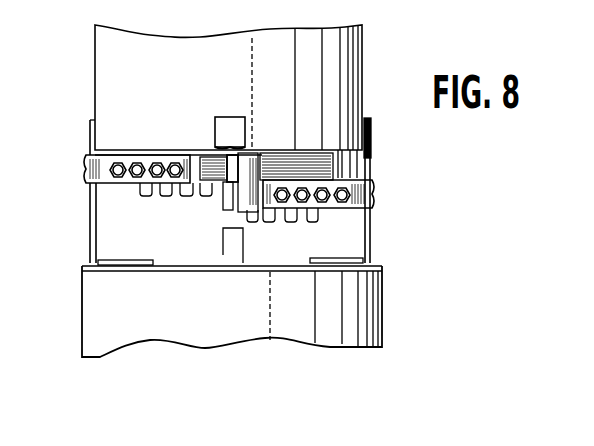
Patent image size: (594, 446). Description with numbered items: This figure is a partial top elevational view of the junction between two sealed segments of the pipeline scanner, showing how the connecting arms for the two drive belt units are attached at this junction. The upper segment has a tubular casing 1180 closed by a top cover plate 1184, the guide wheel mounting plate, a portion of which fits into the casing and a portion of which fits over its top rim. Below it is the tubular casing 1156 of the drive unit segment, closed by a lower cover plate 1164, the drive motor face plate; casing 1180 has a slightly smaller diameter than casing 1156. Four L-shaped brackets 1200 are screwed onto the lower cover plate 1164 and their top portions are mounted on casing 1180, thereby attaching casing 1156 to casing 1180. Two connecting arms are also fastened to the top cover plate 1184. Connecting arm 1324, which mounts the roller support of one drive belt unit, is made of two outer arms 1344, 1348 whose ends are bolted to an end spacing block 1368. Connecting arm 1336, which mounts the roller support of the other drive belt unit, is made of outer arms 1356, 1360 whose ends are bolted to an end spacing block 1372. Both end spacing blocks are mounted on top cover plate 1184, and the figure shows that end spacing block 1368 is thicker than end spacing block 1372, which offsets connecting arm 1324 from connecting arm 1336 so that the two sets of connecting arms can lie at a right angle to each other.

The tubular casing 1180 is at (337, 78).
The top cover plate 1184 is at (272, 148).
The arm 1360 is at (232, 152).
The end spacing block 1372 is at (209, 165).
The arm 1356 is at (88, 170).
The connecting arm 1336 is at (103, 191).
The arm 1344 is at (226, 203).
The L-shaped bracket 1200 is at (223, 243).
The end spacing block 1368 is at (312, 174).
The arm 1348 is at (371, 190).
The connecting arm 1324 is at (330, 218).
The lower cover plate 1164 is at (369, 266).
The tubular casing 1156 is at (350, 322).